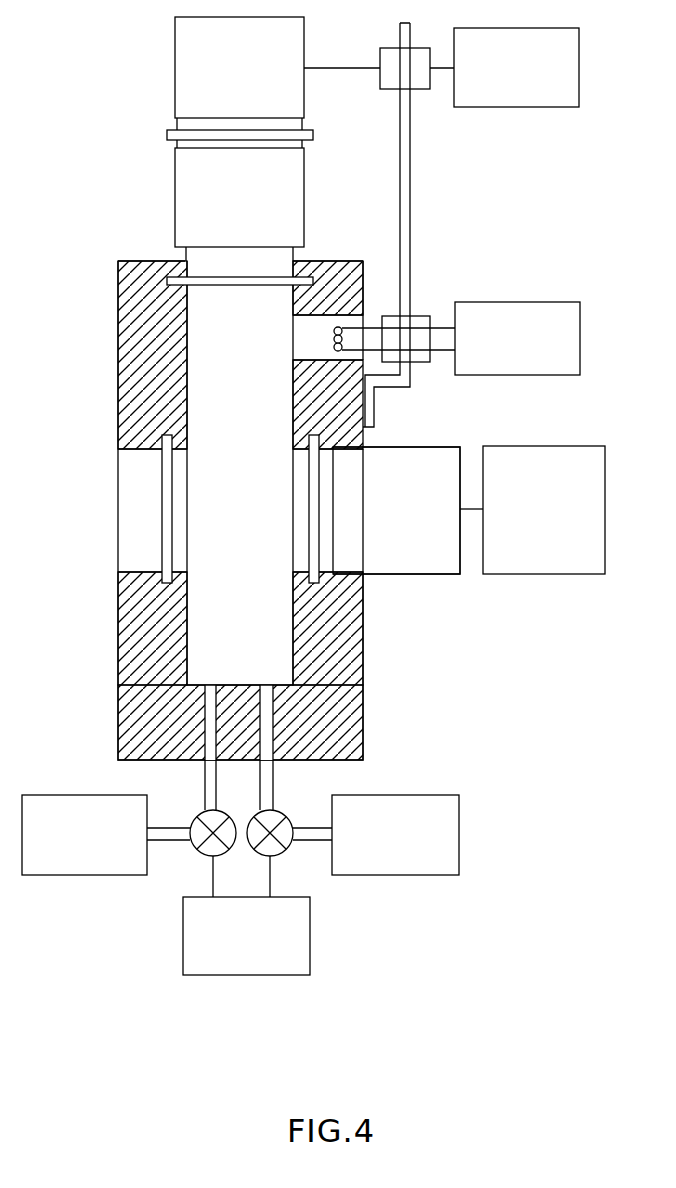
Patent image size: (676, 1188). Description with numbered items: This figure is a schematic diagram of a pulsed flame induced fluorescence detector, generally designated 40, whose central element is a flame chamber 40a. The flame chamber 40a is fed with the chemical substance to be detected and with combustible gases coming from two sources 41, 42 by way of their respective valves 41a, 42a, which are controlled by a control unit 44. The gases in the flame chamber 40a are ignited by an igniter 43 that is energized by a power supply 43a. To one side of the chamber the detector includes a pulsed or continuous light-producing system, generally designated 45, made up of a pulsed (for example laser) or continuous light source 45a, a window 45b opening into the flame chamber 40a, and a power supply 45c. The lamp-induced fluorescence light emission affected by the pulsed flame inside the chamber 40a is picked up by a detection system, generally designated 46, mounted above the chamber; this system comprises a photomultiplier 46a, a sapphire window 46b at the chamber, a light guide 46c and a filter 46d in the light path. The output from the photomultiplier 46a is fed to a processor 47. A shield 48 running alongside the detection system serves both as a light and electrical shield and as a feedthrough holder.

The detector 40 is at (116, 486).
The flame chamber 40a is at (282, 632).
The source 41 is at (63, 853).
The valve 41a is at (193, 857).
The source 42 is at (378, 853).
The valve 42a is at (288, 857).
The igniter 43 is at (320, 342).
The power supply 43a is at (502, 353).
The control unit 44 is at (225, 953).
The light-producing system 45 is at (412, 580).
The light source 45a is at (445, 523).
The window 45b is at (326, 584).
The power supply 45c is at (520, 523).
The detection system 46 is at (172, 174).
The photomultiplier 46a is at (218, 88).
The sapphire window 46b is at (172, 270).
The light guide 46c is at (218, 212).
The filter 46d is at (166, 124).
The processor 47 is at (493, 78).
The shield 48 is at (412, 188).